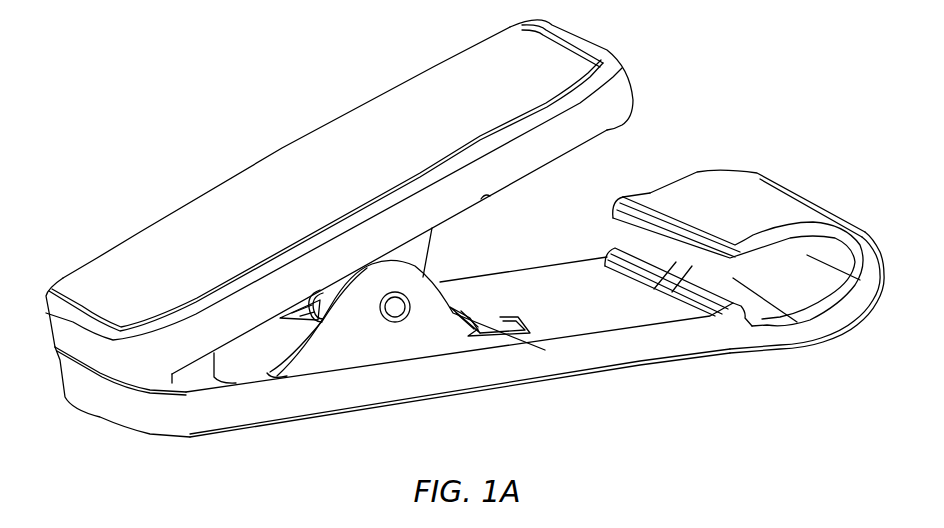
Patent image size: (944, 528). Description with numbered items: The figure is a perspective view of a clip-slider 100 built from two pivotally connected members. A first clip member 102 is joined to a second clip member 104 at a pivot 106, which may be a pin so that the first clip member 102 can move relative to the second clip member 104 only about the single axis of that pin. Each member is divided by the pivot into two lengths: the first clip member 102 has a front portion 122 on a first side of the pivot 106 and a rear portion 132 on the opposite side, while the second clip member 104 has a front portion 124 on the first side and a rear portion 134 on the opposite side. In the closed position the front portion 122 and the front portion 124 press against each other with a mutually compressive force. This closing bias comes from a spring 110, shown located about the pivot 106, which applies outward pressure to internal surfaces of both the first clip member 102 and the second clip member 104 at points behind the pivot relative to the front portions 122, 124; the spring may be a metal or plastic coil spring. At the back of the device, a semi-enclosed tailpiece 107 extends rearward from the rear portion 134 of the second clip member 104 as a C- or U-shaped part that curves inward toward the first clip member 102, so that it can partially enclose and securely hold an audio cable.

The clip-slider 100 is at (240, 60).
The first clip member 102 is at (364, 242).
The second clip member 104 is at (554, 366).
The pivot 106 is at (399, 313).
The semi-enclosed tailpiece 107 is at (836, 182).
The spring 110 is at (522, 330).
The front portion of the first clip member 122 is at (110, 205).
The front portion of the second clip member 124 is at (180, 472).
The rear portion of the first clip member 132 is at (466, 14).
The rear portion of the second clip member 134 is at (762, 386).